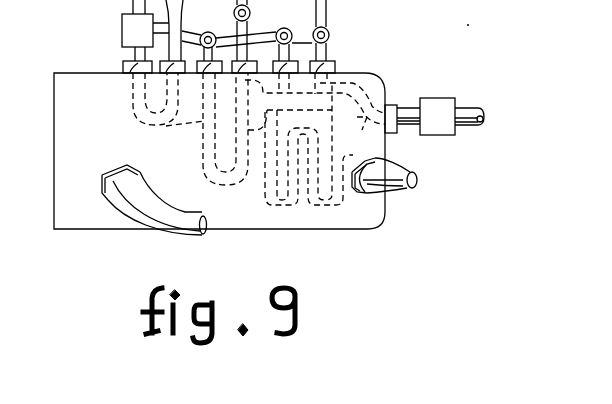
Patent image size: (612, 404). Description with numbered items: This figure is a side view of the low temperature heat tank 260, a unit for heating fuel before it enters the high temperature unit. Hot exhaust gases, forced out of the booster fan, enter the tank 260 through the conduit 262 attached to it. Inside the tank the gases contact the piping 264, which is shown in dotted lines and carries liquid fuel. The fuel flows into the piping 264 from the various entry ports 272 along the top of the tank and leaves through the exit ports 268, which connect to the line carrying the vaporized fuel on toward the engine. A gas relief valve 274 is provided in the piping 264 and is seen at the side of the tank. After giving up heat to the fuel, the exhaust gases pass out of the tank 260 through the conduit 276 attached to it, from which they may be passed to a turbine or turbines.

The low temperature heat tank 260 is at (103, 232).
The conduit 262 is at (167, 210).
The piping 264 is at (171, 124).
The exit ports 268 is at (132, 55).
The entry ports 272 is at (200, 68).
The gas relief valve 274 is at (435, 100).
The conduit 276 is at (397, 170).